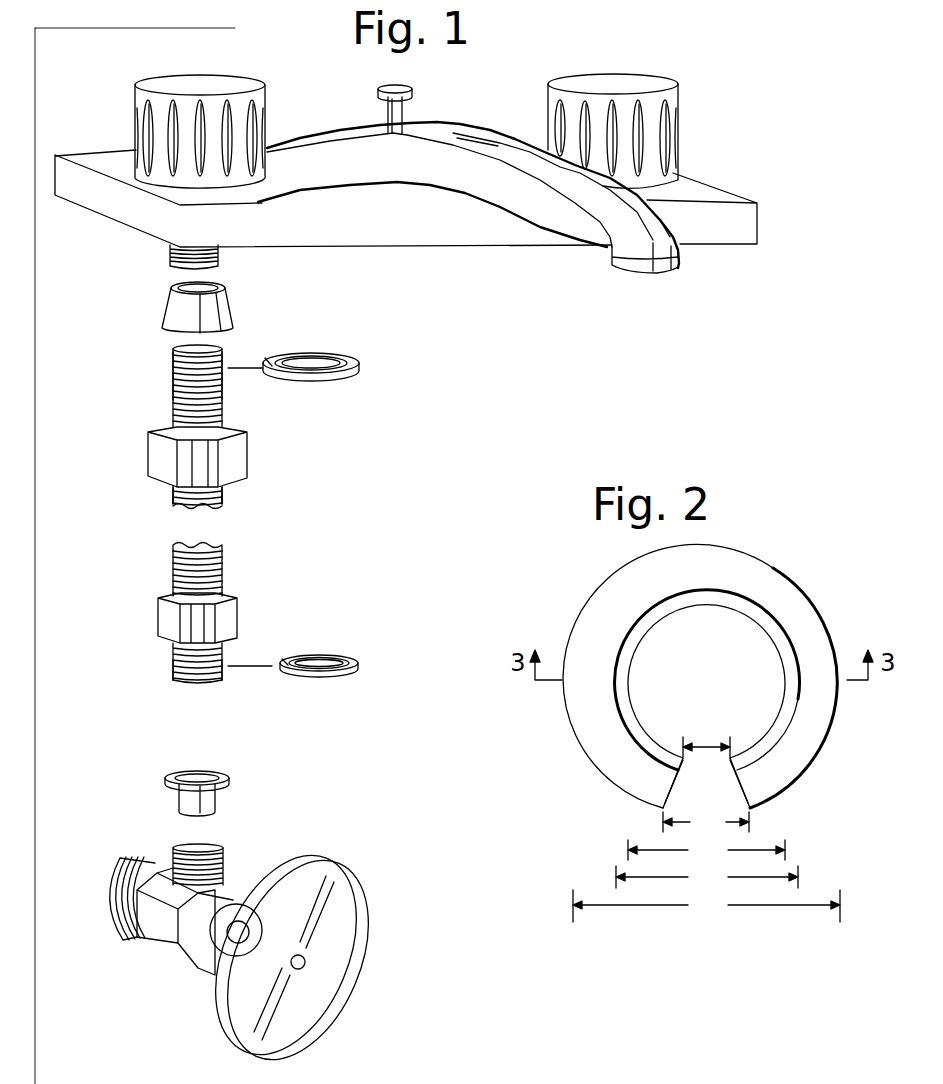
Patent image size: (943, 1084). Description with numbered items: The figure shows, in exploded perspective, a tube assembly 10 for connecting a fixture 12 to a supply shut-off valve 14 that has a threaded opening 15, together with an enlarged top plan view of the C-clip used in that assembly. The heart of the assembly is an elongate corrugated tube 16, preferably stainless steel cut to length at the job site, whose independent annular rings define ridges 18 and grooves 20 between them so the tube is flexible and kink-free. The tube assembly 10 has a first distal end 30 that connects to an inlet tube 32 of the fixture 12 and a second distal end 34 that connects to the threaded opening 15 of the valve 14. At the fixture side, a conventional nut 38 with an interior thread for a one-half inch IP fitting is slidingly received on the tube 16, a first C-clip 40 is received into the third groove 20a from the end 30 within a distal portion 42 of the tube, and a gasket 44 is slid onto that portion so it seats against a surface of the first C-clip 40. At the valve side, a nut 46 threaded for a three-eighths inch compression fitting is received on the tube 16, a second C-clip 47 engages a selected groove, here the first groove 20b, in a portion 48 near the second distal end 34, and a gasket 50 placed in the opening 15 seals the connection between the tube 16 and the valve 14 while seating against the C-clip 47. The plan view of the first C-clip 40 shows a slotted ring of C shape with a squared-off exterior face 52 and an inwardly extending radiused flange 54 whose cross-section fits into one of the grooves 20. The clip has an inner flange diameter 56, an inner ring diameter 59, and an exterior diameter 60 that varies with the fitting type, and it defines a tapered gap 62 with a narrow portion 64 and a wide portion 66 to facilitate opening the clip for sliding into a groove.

In FIG. 1, the tube assembly 10 is at (144, 498).
In FIG. 1, the fixture 12 is at (532, 173).
In FIG. 1, the supply shut-off valve 14 is at (175, 962).
In FIG. 1, the threaded opening 15 is at (172, 858).
In FIG. 1, the corrugated tube 16 is at (206, 508).
In FIG. 1, the ridges 18 is at (223, 497).
In FIG. 1, the grooves 20 is at (222, 491).
In FIG. 1, the third groove 20a is at (175, 372).
In FIG. 1, the first groove 20b is at (175, 668).
In FIG. 1, the first distal end 30 is at (215, 343).
In FIG. 1, the inlet tube 32 is at (219, 256).
In FIG. 1, the second distal end 34 is at (211, 680).
In FIG. 1, the nut 38 is at (166, 452).
In FIG. 1, the first C-clip 40 is at (336, 357).
In FIG. 2, the first C-clip 40 is at (755, 588).
In FIG. 1, the distal portion 42 is at (174, 387).
In FIG. 1, the gasket 44 is at (182, 312).
In FIG. 1, the nut 46 is at (229, 602).
In FIG. 1, the second C-clip 47 is at (347, 675).
In FIG. 1, the distal portion 48 is at (175, 658).
In FIG. 1, the gasket 50 is at (230, 783).
In FIG. 2, the squared-off exterior face 52 is at (818, 612).
In FIG. 2, the inwardly extending radiused flange 54 is at (756, 624).
In FIG. 2, the inner flange diameter 56 is at (706, 851).
In FIG. 2, the inner ring diameter 59 is at (707, 879).
In FIG. 2, the exterior diameter 60 is at (706, 906).
In FIG. 2, the tapered gap 62 is at (725, 783).
In FIG. 2, the narrow portion 64 is at (691, 729).
In FIG. 2, the wide portion 66 is at (706, 823).